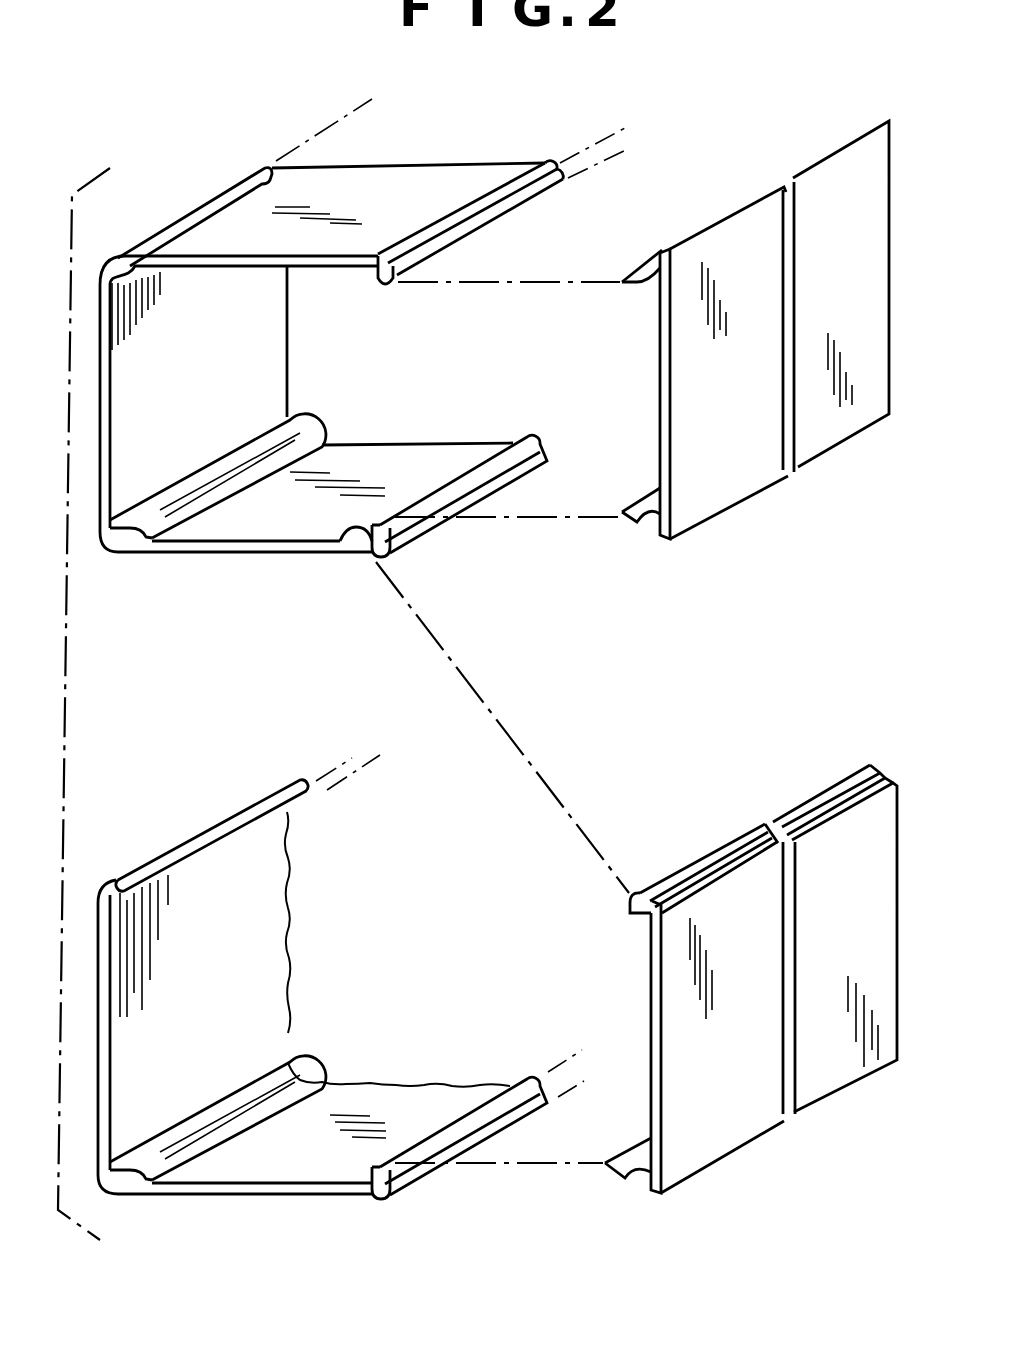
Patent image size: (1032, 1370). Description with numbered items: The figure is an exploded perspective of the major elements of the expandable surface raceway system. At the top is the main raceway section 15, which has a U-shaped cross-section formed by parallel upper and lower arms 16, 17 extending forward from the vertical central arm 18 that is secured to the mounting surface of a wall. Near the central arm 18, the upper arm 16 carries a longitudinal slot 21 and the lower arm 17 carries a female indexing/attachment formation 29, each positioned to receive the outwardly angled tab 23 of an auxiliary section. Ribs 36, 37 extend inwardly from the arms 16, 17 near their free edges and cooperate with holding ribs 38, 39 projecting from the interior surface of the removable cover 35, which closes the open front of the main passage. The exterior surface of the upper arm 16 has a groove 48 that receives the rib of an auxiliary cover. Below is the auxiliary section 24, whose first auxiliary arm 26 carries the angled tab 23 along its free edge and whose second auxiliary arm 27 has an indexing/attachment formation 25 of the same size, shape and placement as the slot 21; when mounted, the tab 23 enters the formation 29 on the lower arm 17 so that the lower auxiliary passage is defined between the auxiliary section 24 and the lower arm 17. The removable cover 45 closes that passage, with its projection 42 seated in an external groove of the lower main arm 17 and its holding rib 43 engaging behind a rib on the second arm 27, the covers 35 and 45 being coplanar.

The main raceway section 15 is at (363, 361).
The upper arm 16 is at (422, 206).
The lower arm 17 is at (427, 481).
The vertical central arm 18 is at (202, 395).
The slot 21 is at (115, 263).
The indexing/attachment formation 29 is at (112, 543).
The rib 36 is at (380, 272).
The rib 37 is at (355, 530).
The groove 48 is at (472, 221).
The removable cover 35 is at (724, 358).
The holding rib 38 is at (638, 288).
The holding rib 39 is at (643, 524).
The outwardly angled tab 23 is at (125, 888).
The auxiliary section 24 is at (341, 999).
The indexing/attachment formation 25 is at (118, 1185).
The first auxiliary arm 26 is at (186, 1014).
The second auxiliary arm 27 is at (290, 1165).
The projection 42 is at (630, 902).
The holding rib 43 is at (613, 1170).
The removable cover 45 is at (703, 989).